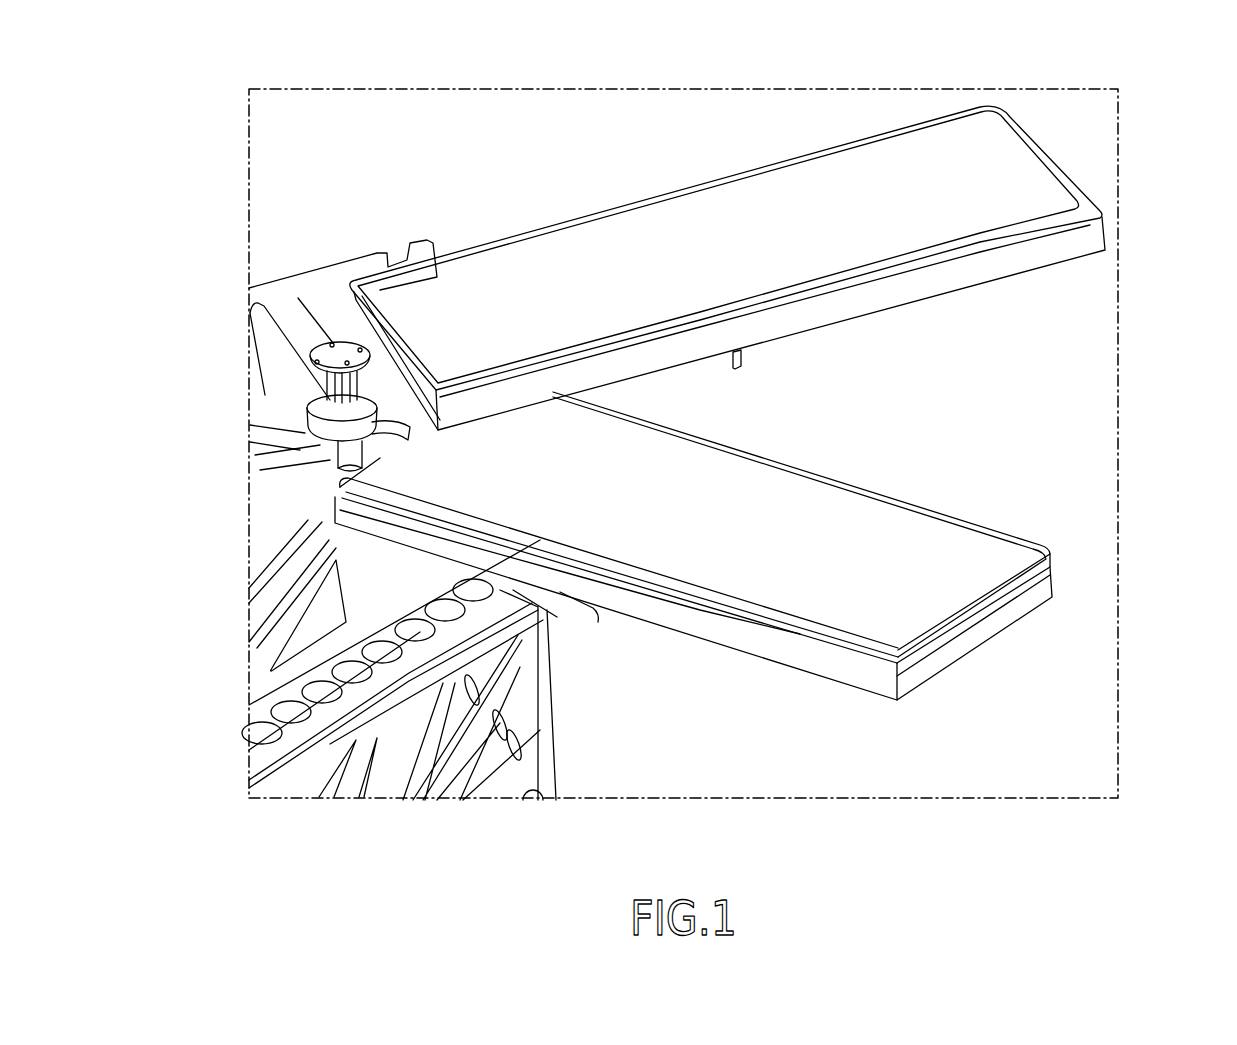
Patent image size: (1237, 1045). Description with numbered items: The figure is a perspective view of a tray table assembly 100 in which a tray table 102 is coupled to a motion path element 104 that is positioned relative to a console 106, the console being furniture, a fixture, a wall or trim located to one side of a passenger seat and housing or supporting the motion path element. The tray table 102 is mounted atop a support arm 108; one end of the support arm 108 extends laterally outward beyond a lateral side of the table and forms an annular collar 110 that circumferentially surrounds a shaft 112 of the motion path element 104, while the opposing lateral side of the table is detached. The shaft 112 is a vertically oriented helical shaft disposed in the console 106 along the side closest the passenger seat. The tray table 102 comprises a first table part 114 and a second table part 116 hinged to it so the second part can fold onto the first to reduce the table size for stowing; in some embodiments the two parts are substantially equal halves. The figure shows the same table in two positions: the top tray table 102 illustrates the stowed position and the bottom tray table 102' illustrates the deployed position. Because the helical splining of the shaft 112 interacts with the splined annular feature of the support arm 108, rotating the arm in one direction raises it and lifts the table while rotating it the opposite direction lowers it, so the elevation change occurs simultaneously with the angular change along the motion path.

The tray table assembly 100 is at (300, 54).
The tray table 102 is at (727, 235).
The tray table (deployed position) 102' is at (695, 527).
The motion path element 104 is at (318, 392).
The console 106 is at (300, 528).
The support arm 108 is at (710, 368).
The annular collar 110 is at (310, 408).
The shaft 112 is at (322, 435).
The first table part 114 is at (1053, 587).
The second table part 116 is at (1050, 567).